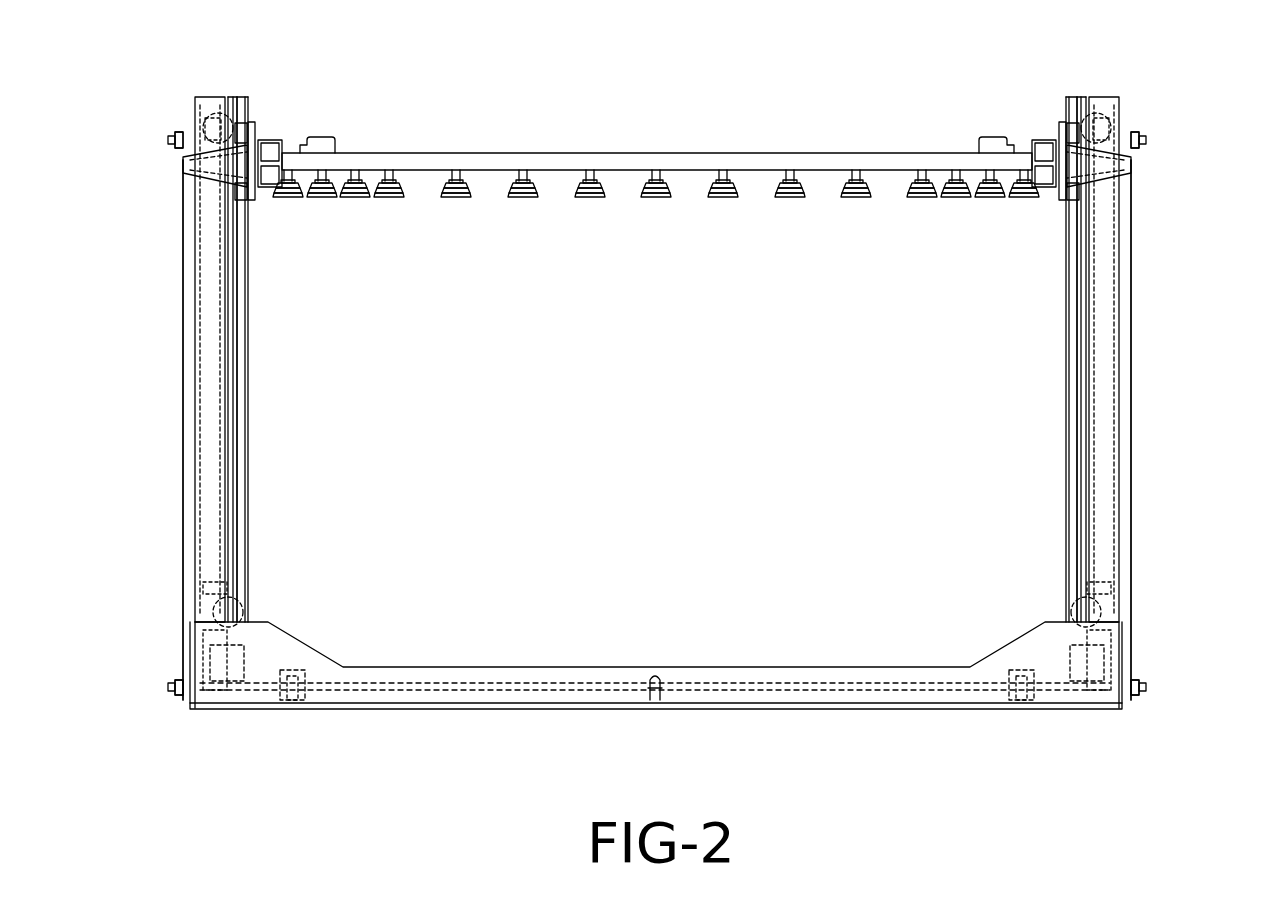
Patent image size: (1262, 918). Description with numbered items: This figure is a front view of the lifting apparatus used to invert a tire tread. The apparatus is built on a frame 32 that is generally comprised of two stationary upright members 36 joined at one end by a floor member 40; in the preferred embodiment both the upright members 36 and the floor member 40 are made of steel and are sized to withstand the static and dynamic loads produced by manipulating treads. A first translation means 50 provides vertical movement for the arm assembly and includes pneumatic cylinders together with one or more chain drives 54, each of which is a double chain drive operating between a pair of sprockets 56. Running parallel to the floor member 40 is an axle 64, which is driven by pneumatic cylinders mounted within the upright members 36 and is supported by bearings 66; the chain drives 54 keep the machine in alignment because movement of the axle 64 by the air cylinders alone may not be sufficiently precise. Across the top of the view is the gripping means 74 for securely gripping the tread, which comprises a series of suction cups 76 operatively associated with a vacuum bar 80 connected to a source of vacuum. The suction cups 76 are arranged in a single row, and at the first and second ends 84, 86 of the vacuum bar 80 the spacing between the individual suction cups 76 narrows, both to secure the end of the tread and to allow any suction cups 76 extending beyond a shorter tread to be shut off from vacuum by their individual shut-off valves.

The frame 32 is at (215, 285).
The upright members 36 is at (215, 363).
The floor member 40 is at (550, 700).
The first translation means 50 is at (1145, 95).
The chain drives 54 is at (183, 482).
The sprockets 56 is at (175, 140).
The axle 64 is at (818, 692).
The bearings 66 is at (293, 700).
The gripping means 74 is at (808, 100).
The suction cups 76 is at (460, 197).
The vacuum bar 80 is at (605, 152).
The first end of vacuum bar 84 is at (291, 163).
The second end of vacuum bar 86 is at (1024, 155).